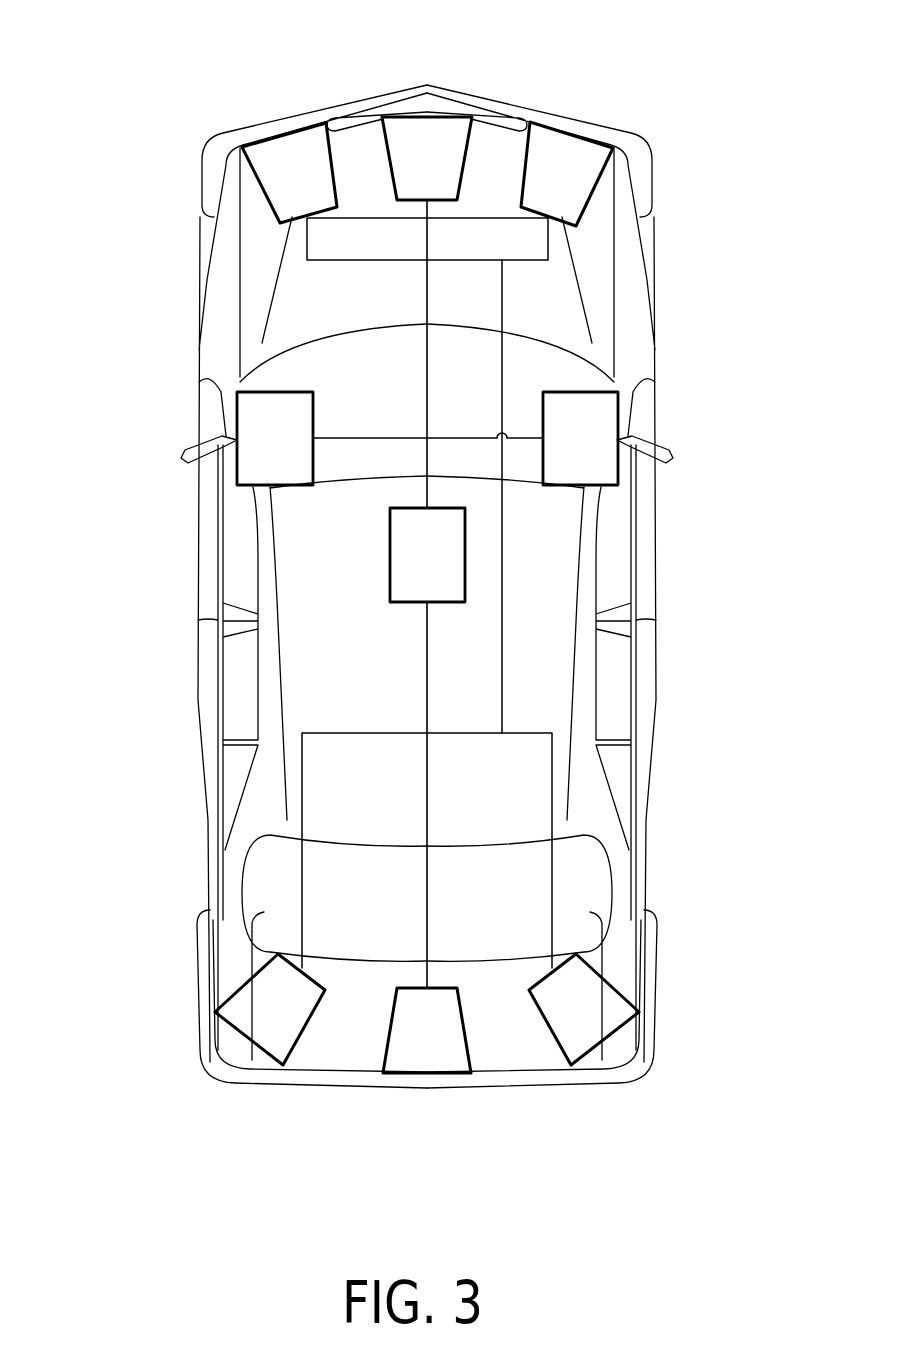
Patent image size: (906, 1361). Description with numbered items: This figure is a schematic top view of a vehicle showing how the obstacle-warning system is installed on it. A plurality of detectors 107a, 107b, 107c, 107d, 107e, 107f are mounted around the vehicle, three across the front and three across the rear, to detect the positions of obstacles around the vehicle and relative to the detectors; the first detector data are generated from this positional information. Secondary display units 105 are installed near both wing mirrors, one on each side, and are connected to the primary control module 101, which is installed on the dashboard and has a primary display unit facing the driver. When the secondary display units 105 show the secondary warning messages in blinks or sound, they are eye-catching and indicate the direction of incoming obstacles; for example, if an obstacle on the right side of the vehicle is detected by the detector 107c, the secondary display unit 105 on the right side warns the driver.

The primary control module 101 is at (465, 553).
The secondary display unit 105 is at (273, 390).
The detector 107a is at (280, 132).
The detector 107b is at (428, 117).
The detector 107c is at (573, 133).
The detector 107d is at (243, 1038).
The detector 107e is at (428, 1075).
The detector 107f is at (623, 1032).